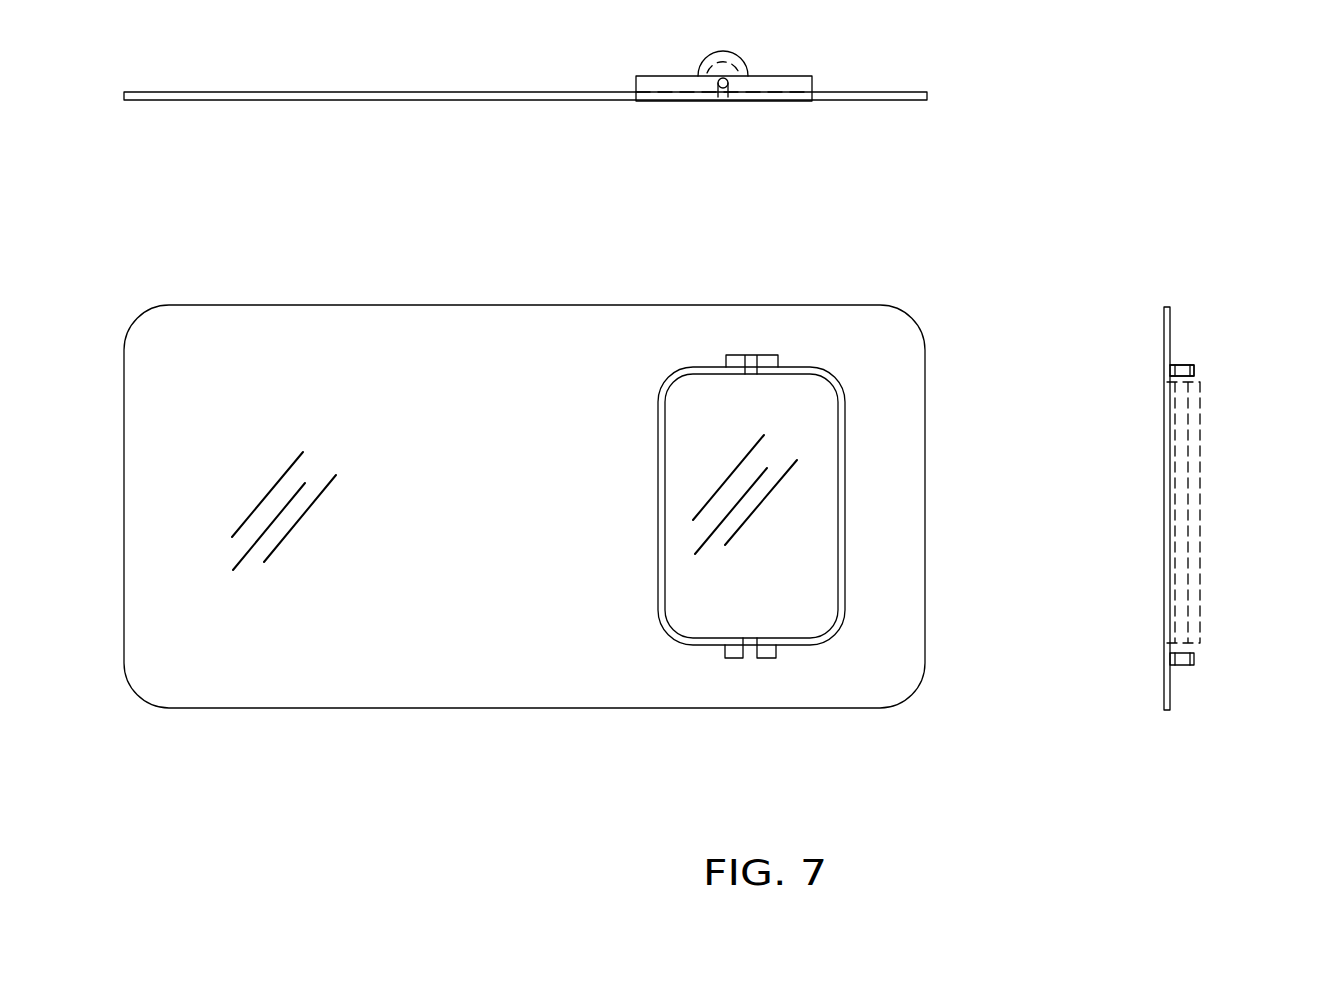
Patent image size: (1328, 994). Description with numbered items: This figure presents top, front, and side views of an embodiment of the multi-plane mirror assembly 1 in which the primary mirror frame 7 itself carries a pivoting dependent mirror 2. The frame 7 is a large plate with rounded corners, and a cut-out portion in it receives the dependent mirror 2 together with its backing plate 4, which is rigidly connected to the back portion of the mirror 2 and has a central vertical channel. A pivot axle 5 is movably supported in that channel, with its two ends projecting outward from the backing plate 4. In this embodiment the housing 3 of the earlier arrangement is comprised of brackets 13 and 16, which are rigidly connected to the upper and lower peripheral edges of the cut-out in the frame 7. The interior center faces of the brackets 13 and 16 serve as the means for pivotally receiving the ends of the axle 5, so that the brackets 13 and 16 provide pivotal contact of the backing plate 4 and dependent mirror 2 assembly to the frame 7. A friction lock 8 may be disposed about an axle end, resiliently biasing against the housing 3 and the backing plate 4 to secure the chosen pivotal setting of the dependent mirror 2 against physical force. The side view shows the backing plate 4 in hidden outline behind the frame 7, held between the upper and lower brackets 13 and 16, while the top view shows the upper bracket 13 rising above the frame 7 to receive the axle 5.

The multi-plane mirror assembly 1 is at (922, 290).
The dependent mirror 2 is at (823, 428).
The dependent mirror housing 3 is at (858, 519).
The backing plate 4 is at (760, 77).
The pivot axle 5 is at (1180, 362).
The primary mirror frame 7 is at (822, 102).
The friction lock 8 is at (762, 637).
The bracket 13 is at (727, 57).
The bracket 16 is at (762, 658).